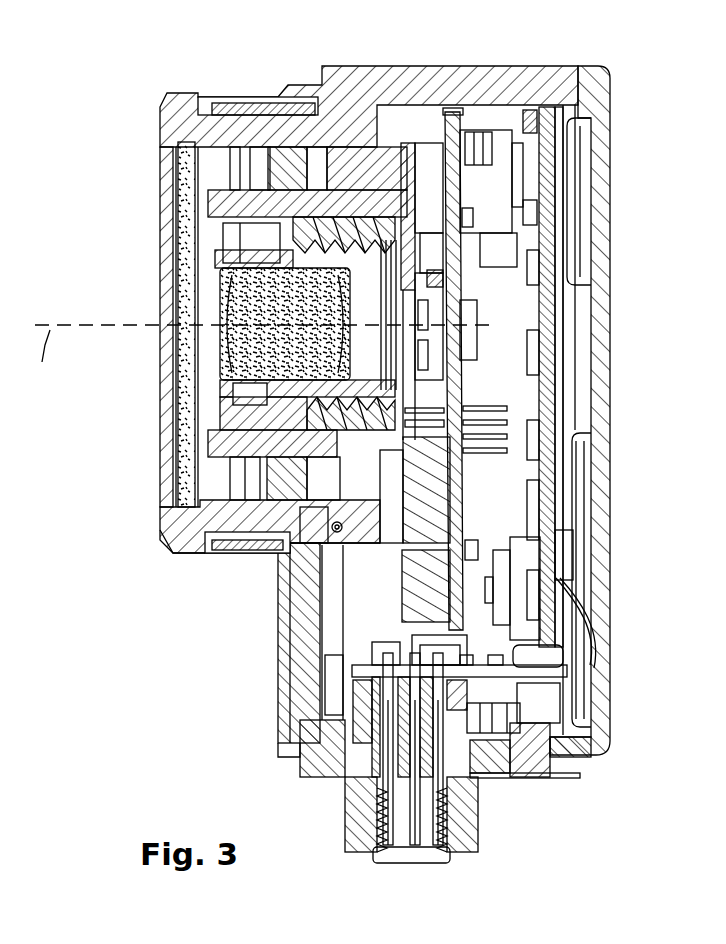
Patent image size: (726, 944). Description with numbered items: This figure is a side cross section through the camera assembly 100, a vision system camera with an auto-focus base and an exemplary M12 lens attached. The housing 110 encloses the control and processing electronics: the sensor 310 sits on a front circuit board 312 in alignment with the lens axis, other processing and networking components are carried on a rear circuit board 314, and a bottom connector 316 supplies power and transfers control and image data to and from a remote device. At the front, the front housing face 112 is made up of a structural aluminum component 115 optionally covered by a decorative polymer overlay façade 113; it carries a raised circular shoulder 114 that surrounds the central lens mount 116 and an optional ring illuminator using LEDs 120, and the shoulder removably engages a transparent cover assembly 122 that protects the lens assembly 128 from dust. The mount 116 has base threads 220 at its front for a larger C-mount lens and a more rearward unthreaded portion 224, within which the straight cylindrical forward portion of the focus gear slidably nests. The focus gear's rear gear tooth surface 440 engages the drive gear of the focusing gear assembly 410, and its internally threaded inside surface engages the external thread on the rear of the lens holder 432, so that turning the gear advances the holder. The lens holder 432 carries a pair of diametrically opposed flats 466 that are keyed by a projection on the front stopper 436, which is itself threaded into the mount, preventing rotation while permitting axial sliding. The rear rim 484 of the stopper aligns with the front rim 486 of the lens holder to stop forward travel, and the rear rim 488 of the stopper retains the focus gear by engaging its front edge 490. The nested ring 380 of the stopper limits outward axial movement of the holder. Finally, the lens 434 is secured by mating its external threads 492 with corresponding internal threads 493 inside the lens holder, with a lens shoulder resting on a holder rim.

The camera assembly 100 is at (626, 180).
The camera assembly housing 110 is at (604, 400).
The front housing face 112 is at (272, 630).
The decorative polymer overlay façade 113 is at (283, 707).
The raised circular shoulder 114 is at (280, 102).
The structural face component 115 is at (292, 745).
The lens mount 116 is at (290, 553).
The LEDs 120 is at (215, 185).
The transparent cover assembly 122 is at (185, 545).
The lens assembly 128 is at (243, 398).
The base threads 220 is at (300, 518).
The unthreaded portion 224 is at (362, 452).
The sensor 310 is at (453, 418).
The front circuit board 312 is at (560, 378).
The rear circuit board 314 is at (445, 378).
The bottom connector 316 is at (477, 829).
The ring 380 is at (290, 420).
The focusing gear assembly 410 is at (414, 124).
The lens holder 432 is at (300, 222).
The lens 434 is at (240, 393).
The front stopper 436 is at (208, 441).
The rear gear tooth surface 440 is at (380, 148).
The flats 466 is at (298, 456).
The rear rim of the stopper 484 is at (262, 228).
The front rim of the lens holder 486 is at (300, 250).
The rear rim of the stopper 488 is at (305, 205).
The front edge of the focus gear 490 is at (232, 213).
The external threads 492 is at (300, 276).
The internal threads 493 is at (490, 180).